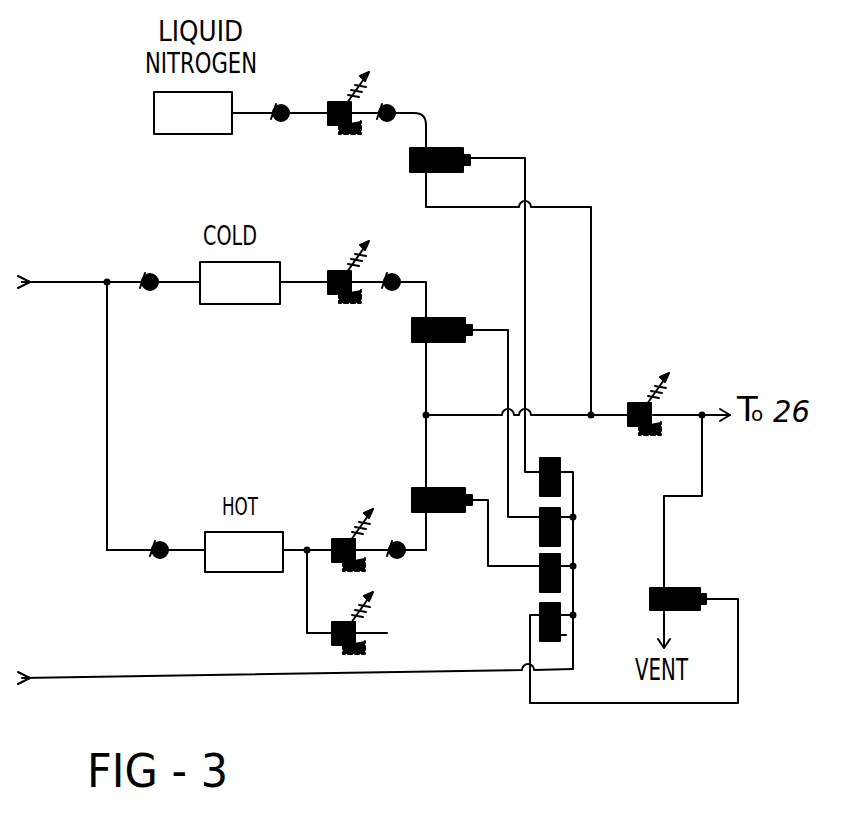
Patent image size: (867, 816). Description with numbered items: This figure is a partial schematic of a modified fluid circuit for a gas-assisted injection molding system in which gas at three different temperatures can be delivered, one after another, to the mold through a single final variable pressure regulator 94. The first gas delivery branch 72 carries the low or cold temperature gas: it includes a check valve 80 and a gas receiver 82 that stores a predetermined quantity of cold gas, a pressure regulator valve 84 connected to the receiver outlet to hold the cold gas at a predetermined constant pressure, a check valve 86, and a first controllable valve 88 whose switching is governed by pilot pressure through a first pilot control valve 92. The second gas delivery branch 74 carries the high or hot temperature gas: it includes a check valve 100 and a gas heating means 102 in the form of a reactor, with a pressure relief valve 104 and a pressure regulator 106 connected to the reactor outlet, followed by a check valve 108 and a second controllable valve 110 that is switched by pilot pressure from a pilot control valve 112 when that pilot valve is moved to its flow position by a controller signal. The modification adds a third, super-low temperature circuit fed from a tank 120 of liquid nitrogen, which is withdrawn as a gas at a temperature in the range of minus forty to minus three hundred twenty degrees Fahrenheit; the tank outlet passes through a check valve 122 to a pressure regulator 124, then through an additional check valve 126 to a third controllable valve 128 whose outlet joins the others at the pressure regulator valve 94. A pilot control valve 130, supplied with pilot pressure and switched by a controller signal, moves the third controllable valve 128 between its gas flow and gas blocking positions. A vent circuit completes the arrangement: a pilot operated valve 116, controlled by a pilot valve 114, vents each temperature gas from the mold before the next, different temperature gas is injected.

The first gas delivery branch 72 is at (110, 282).
The second gas delivery branch 74 is at (108, 514).
The check valve 80 is at (150, 292).
The gas receiver 82 is at (234, 304).
The pressure regulator valve 84 is at (328, 271).
The check valve 86 is at (392, 273).
The first controllable valve 88 is at (455, 318).
The first pilot control valve 92 is at (560, 512).
The final variable pressure regulator 94 is at (628, 403).
The check valve 100 is at (160, 562).
The gas heating means 102 is at (255, 574).
The pressure relief valve 104 is at (355, 638).
The pressure regulator 106 is at (333, 540).
The check valve 108 is at (395, 560).
The second controllable valve 110 is at (430, 488).
The pilot control valve 112 is at (560, 582).
The pilot valve 114 is at (566, 635).
The pilot operated valve 116 is at (690, 590).
The tank 120 is at (178, 131).
The check valve 122 is at (276, 121).
The pressure regulator 124 is at (328, 104).
The check valve 126 is at (398, 108).
The third controllable valve 128 is at (465, 150).
The pilot control valve 130 is at (545, 460).